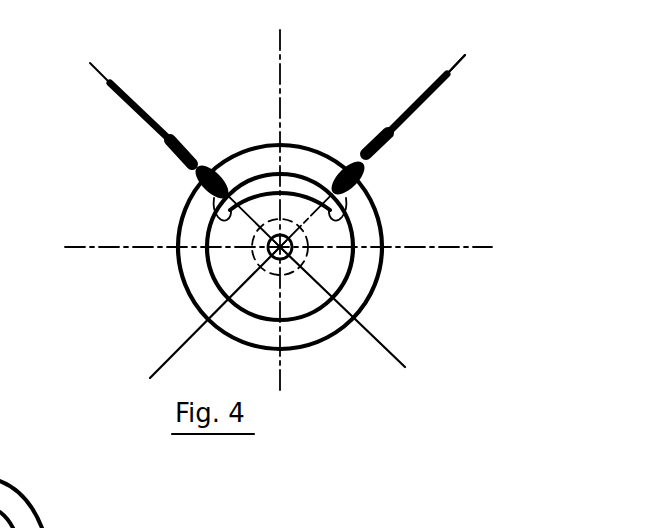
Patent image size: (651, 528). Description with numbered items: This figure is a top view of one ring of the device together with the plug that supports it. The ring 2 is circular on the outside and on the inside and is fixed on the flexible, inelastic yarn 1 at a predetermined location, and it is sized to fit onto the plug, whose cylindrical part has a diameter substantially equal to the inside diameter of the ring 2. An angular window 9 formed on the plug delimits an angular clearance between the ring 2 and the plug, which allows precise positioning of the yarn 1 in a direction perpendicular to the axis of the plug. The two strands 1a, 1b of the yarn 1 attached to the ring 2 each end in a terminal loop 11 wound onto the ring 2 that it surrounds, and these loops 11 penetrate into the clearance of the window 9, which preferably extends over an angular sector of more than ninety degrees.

The yarn 1 is at (406, 101).
The strand of the yarn 1a is at (420, 108).
The strand of the yarn 1b is at (137, 118).
The ring 2 is at (173, 265).
The angular window 9 is at (268, 187).
The terminal loop 11 is at (214, 163).